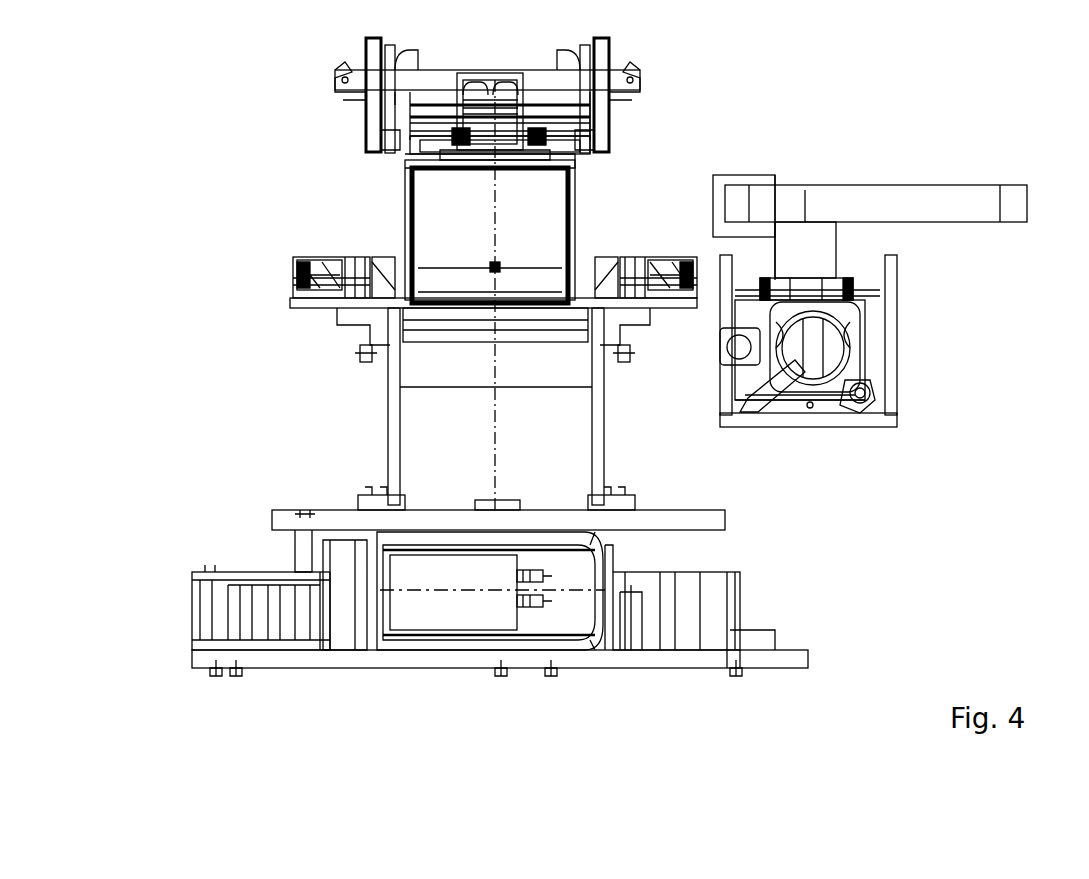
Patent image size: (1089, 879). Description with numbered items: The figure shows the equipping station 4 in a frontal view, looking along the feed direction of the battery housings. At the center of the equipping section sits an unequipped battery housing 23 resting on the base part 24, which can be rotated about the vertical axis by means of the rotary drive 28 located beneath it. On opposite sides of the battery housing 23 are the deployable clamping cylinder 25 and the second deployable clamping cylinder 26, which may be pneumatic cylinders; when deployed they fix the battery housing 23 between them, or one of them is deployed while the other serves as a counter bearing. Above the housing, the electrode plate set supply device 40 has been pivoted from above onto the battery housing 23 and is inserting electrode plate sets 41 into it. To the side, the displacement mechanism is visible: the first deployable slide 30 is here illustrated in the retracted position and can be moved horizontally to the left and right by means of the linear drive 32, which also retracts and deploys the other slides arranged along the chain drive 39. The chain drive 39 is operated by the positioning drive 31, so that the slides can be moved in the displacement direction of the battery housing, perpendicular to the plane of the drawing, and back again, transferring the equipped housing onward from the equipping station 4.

The equipping station 4 is at (203, 387).
The battery housing 23 is at (405, 190).
The base part 24 is at (557, 308).
The deployable clamping cylinder 25 is at (650, 258).
The second deployable clamping cylinder 26 is at (300, 260).
The rotary drive 28 is at (600, 545).
The first deployable slide 30 is at (900, 187).
The positioning drive 31 is at (845, 398).
The linear drive 32 is at (825, 238).
The chain drive 39 is at (830, 287).
The electrode plate set supply device 40 is at (445, 72).
The electrode plate sets 41 is at (438, 224).